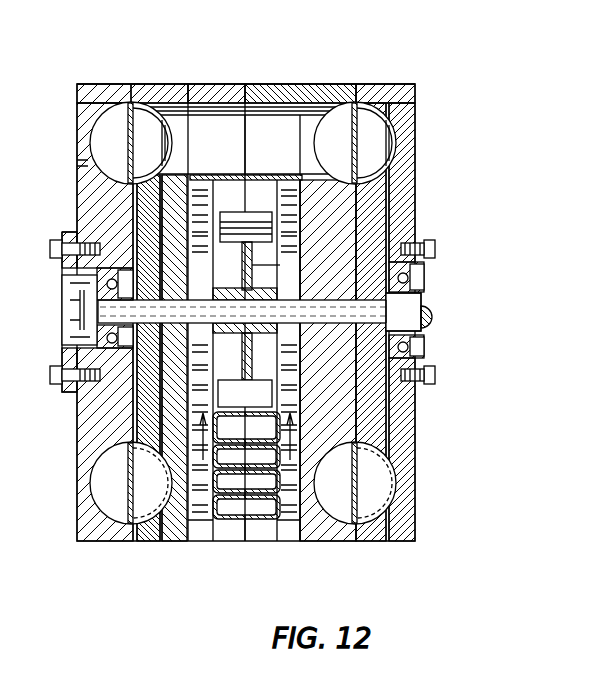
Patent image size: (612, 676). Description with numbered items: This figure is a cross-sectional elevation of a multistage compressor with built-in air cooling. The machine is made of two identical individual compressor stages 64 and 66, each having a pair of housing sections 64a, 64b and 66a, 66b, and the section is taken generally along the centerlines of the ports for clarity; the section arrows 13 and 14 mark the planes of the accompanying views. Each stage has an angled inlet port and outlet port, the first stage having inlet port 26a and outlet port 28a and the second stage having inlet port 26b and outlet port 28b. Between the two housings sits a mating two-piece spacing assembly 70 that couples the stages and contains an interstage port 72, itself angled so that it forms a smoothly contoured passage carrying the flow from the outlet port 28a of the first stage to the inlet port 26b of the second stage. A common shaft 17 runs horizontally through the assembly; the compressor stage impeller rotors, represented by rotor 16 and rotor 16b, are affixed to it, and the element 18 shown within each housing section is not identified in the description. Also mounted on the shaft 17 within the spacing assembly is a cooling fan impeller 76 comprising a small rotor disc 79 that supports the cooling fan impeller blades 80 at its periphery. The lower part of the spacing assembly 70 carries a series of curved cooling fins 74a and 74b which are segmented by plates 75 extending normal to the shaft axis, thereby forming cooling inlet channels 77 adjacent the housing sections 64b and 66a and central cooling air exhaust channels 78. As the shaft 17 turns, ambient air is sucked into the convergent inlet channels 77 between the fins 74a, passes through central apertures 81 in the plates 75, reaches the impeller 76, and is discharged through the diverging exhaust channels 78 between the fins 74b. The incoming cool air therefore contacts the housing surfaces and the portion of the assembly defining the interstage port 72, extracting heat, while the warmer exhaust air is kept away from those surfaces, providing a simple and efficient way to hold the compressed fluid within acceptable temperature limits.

The section line 13- 13 is at (243, 68).
The section line 14- 14 is at (62, 137).
The compressor stage impeller rotor 16 is at (138, 250).
The compressor stage impeller rotor 16b is at (367, 359).
The shaft 17 is at (150, 313).
The ball 18 is at (157, 157).
The inlet port 26a is at (88, 173).
The inlet port 26b is at (313, 173).
The outlet port 28a is at (175, 177).
The outlet port 28b is at (402, 167).
The compressor stage 64 is at (112, 60).
The housing section 64a is at (89, 95).
The housing section 64b is at (164, 92).
The compressor stage 66 is at (345, 60).
The housing section 66a is at (339, 533).
The housing section 66b is at (392, 88).
The spacing assembly 70 is at (258, 92).
The interstage port 72 is at (284, 115).
The cooling fins 74a is at (283, 360).
The cooling fins 74b is at (263, 522).
The plates 75 is at (272, 397).
The cooling fan impeller 76 is at (270, 262).
The cooling inlet channels 77 is at (202, 528).
The cooling air exhaust channels 78 is at (235, 533).
The rotor disc 79 is at (247, 270).
The cooling fan impeller blades 80 is at (236, 222).
The central apertures 81 is at (222, 356).